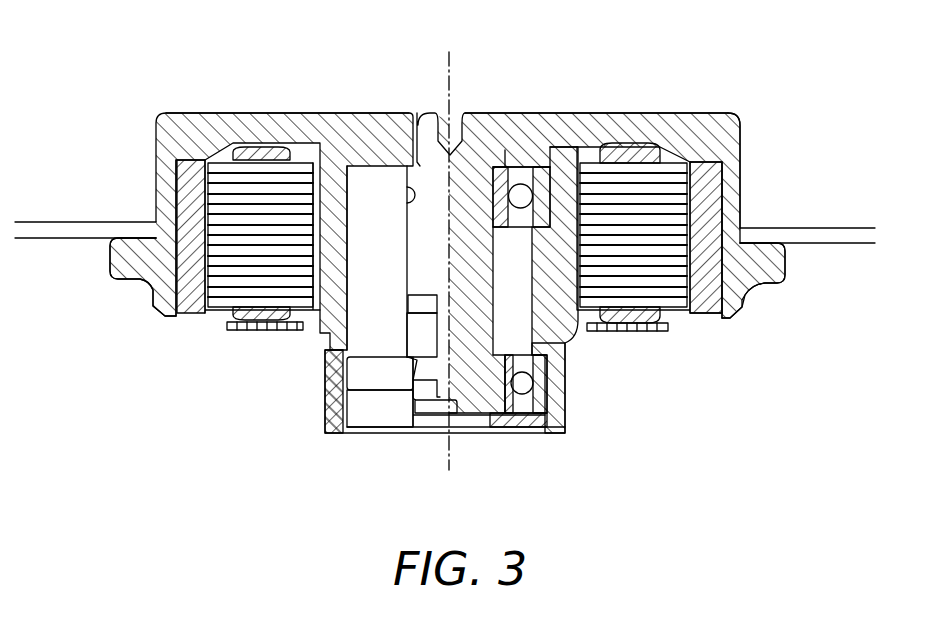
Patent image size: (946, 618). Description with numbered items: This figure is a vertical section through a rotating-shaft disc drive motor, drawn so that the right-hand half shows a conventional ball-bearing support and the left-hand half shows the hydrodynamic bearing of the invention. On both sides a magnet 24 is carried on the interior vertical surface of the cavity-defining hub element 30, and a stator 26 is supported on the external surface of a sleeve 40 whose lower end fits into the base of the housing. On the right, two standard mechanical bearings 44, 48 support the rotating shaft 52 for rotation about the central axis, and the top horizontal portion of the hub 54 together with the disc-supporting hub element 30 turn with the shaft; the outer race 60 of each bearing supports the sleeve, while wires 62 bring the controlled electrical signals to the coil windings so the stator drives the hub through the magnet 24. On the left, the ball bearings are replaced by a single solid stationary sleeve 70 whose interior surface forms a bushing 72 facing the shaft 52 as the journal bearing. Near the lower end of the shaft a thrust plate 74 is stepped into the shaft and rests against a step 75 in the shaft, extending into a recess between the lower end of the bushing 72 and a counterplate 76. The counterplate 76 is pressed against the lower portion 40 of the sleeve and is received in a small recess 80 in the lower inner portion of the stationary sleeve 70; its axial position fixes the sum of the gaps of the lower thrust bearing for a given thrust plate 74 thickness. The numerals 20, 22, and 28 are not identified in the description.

The shaft 20 is at (459, 214).
The housing 22 is at (447, 227).
The magnet 24 is at (453, 237).
The stator 26 is at (462, 279).
The housing corner 28 is at (771, 164).
The hub element 30 is at (501, 225).
The sleeve 40 is at (447, 388).
The mechanical bearing 44 is at (493, 430).
The mechanical bearing 48 is at (503, 221).
The rotating shaft 52 is at (482, 261).
The top horizontal portion of the hub 54 is at (447, 92).
The outer race 60 is at (540, 115).
The wires 62 is at (459, 358).
The stationary sleeve 70 is at (391, 282).
The bushing 72 is at (365, 134).
The thrust plate 74 is at (341, 419).
The step 75 is at (407, 332).
The counterplate 76 is at (446, 419).
The recess 80 is at (340, 385).